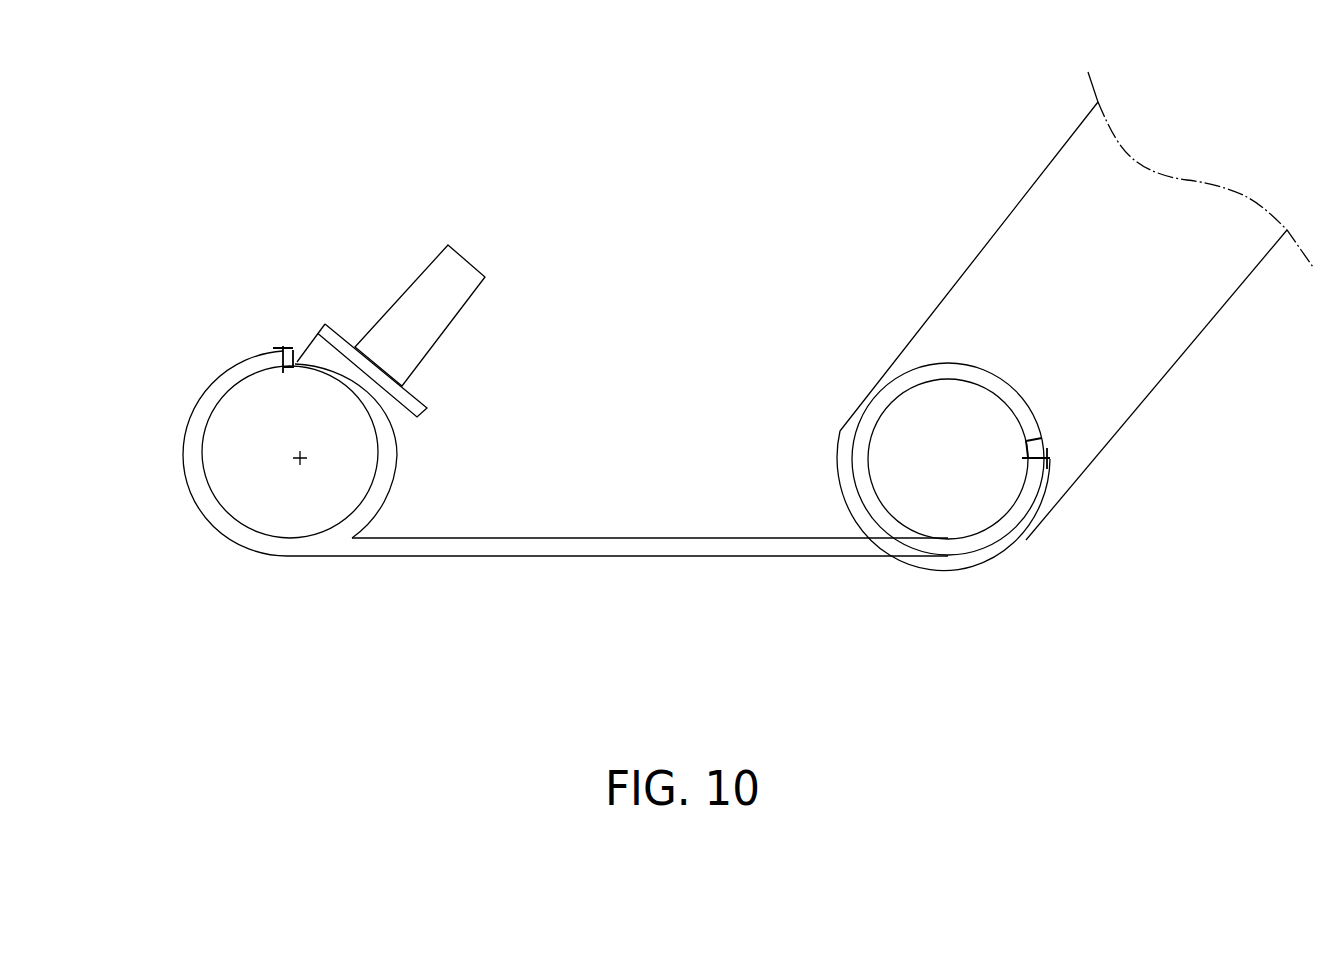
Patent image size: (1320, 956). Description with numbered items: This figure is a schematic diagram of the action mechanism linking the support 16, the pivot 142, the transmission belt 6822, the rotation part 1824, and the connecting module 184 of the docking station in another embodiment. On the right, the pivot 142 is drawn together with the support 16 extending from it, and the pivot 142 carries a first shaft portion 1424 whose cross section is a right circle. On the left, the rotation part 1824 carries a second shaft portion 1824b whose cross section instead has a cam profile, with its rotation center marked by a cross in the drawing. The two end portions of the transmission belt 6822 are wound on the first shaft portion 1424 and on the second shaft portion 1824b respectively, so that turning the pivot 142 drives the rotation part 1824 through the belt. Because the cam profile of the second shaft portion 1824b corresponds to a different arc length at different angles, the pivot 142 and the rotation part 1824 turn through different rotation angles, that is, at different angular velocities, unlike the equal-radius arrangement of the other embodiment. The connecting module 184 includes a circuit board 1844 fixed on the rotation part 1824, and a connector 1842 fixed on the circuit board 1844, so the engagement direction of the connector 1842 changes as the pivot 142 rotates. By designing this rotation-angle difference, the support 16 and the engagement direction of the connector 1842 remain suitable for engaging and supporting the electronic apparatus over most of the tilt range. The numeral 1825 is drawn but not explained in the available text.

The support 16 is at (1028, 250).
The pivot 142 is at (870, 418).
The first shaft portion 1424 is at (982, 503).
The transmission belt 6822 is at (633, 555).
The rotation part 1824 is at (388, 472).
The second shaft portion 1824b is at (323, 512).
The roller shaft 1825 is at (245, 392).
The connecting module 184 is at (205, 205).
The connector 1842 is at (417, 305).
The circuit board 1844 is at (332, 337).